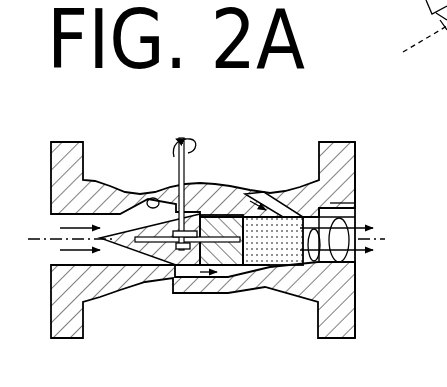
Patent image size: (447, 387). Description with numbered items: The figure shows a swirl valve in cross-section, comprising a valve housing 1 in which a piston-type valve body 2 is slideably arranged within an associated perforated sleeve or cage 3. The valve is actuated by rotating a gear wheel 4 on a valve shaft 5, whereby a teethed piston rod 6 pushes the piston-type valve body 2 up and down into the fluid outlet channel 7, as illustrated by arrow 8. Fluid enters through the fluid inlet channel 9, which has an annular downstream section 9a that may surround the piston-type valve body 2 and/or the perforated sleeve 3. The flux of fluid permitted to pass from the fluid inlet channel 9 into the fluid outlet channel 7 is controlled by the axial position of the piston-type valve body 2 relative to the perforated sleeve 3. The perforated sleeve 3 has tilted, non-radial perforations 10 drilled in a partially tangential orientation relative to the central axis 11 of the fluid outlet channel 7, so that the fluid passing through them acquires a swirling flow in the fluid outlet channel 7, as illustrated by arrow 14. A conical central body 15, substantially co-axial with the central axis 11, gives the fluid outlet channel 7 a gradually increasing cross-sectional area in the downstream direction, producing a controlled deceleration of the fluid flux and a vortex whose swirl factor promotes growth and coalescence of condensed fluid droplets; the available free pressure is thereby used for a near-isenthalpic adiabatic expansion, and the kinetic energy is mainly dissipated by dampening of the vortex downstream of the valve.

The valve housing 1 is at (88, 178).
The piston-type valve body 2 is at (229, 250).
The perforated sleeve 3 is at (272, 268).
The gear wheel 4 is at (176, 252).
The valve shaft 5 is at (175, 156).
The teethed piston rod 6 is at (153, 198).
The fluid outlet channel 7 is at (330, 208).
The arrow 8 is at (188, 245).
The fluid inlet channel 9 is at (51, 216).
The annular downstream section 9a is at (262, 199).
The tilted perforations 10 is at (290, 207).
The central axis 11 is at (377, 240).
The arrow 14 is at (330, 258).
The conical central body 15 is at (330, 202).